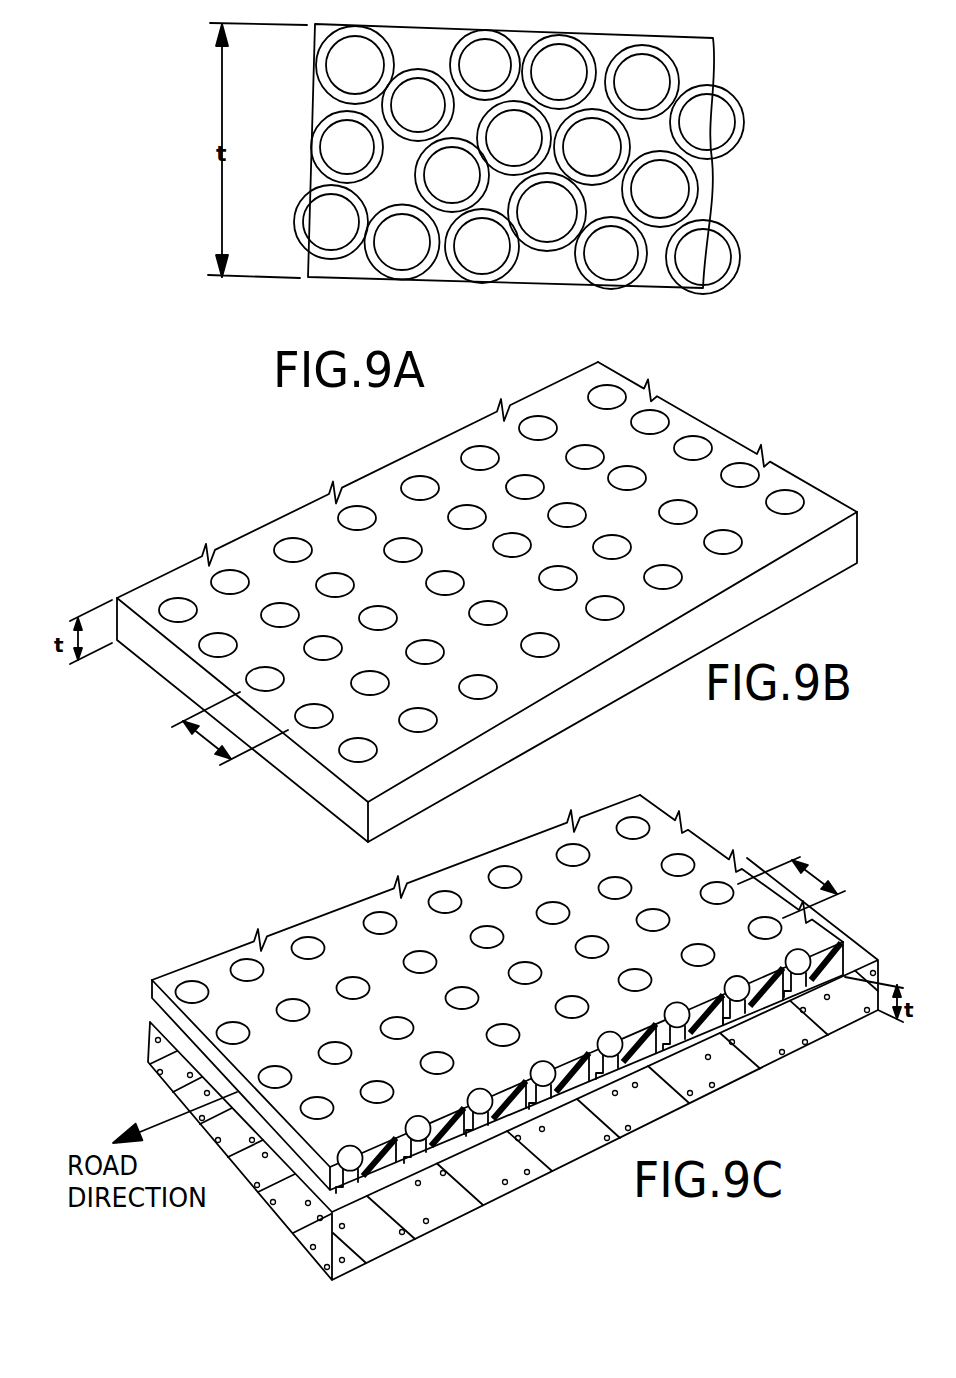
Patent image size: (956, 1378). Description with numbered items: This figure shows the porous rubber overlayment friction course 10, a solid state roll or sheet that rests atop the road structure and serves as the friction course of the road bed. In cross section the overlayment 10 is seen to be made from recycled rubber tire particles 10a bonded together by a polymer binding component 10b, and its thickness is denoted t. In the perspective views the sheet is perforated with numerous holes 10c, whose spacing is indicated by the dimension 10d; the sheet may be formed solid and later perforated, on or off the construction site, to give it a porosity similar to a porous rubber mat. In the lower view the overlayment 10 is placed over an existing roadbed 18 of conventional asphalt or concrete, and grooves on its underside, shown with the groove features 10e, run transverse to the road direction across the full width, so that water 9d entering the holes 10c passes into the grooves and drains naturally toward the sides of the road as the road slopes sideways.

In FIG. 9A, the porous rubber overlayment friction course 10 is at (657, 270).
In FIG. 9B, the porous rubber overlayment friction course 10 is at (155, 648).
In FIG. 9C, the porous rubber overlayment friction course 10 is at (330, 922).
In FIG. 9A, the recycled rubber tire particles 10a is at (483, 263).
In FIG. 9A, the polymer binding component 10b is at (378, 262).
In FIG. 9B, the holes 10c is at (222, 642).
In FIG. 9C, the holes 10c is at (505, 870).
In FIG. 9B, the hole spacing 10d is at (203, 748).
In FIG. 9C, the hole spacing 10d is at (802, 882).
In FIG. 9C, the anchoring pin on sheet 10e is at (742, 1010).
In FIG. 9C, the water 9d is at (740, 1000).
In FIG. 9C, the existing roadbed 18 is at (317, 1227).